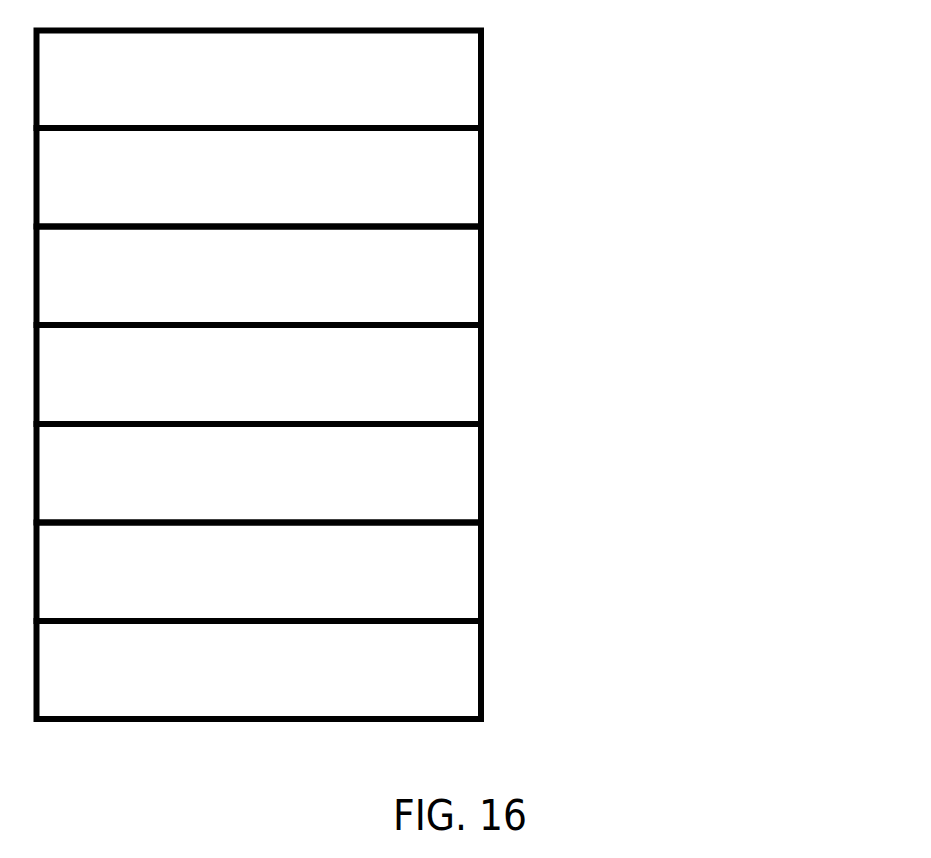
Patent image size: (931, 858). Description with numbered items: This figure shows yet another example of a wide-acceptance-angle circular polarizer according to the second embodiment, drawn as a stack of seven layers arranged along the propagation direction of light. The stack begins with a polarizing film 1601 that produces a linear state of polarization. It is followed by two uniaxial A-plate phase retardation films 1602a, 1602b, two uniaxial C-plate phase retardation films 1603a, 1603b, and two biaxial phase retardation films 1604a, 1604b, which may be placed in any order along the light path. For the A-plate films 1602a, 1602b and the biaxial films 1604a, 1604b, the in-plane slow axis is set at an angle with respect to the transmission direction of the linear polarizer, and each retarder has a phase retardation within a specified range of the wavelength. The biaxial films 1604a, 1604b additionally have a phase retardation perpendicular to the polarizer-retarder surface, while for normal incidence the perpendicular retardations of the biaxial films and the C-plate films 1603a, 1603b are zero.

The polarizing film 1601 is at (487, 65).
The uniaxial A-plate phase retardation film 1602a is at (487, 178).
The uniaxial C-plate phase retardation film 1603a is at (487, 278).
The biaxial phase retardation film 1604a is at (487, 376).
The uniaxial A-plate phase retardation film 1602b is at (487, 473).
The uniaxial C-plate phase retardation film 1603b is at (487, 572).
The biaxial phase retardation film 1604b is at (487, 670).